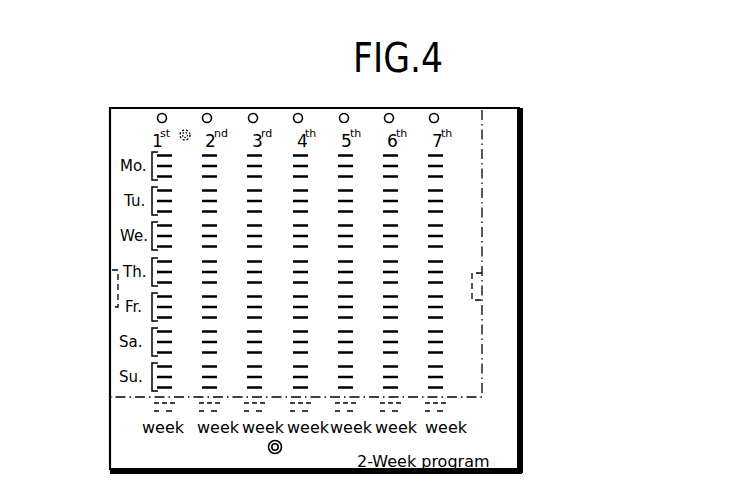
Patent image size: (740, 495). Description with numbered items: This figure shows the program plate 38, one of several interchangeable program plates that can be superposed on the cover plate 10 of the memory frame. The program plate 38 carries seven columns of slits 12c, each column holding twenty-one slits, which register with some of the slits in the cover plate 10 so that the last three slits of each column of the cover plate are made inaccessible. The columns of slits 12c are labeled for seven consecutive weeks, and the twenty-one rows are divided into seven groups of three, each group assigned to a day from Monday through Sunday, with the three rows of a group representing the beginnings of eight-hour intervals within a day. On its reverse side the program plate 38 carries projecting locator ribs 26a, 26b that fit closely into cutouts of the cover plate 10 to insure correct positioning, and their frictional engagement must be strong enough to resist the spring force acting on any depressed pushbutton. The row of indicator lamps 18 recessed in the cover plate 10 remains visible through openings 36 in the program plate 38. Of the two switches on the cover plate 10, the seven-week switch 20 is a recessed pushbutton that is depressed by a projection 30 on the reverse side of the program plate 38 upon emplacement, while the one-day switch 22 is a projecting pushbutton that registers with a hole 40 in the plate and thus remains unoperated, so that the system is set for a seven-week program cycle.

The cover plate 10 is at (464, 200).
The slits 12c is at (308, 200).
The indicator lamps 18 is at (391, 117).
The 7-week switch 20 is at (185, 128).
The 1-day switch 22 is at (268, 445).
The locator rib 26a is at (110, 293).
The locator rib 26b is at (486, 297).
The projection 30 is at (180, 129).
The openings 36 is at (208, 113).
The program plate 38 is at (472, 118).
The hole 40 is at (282, 447).